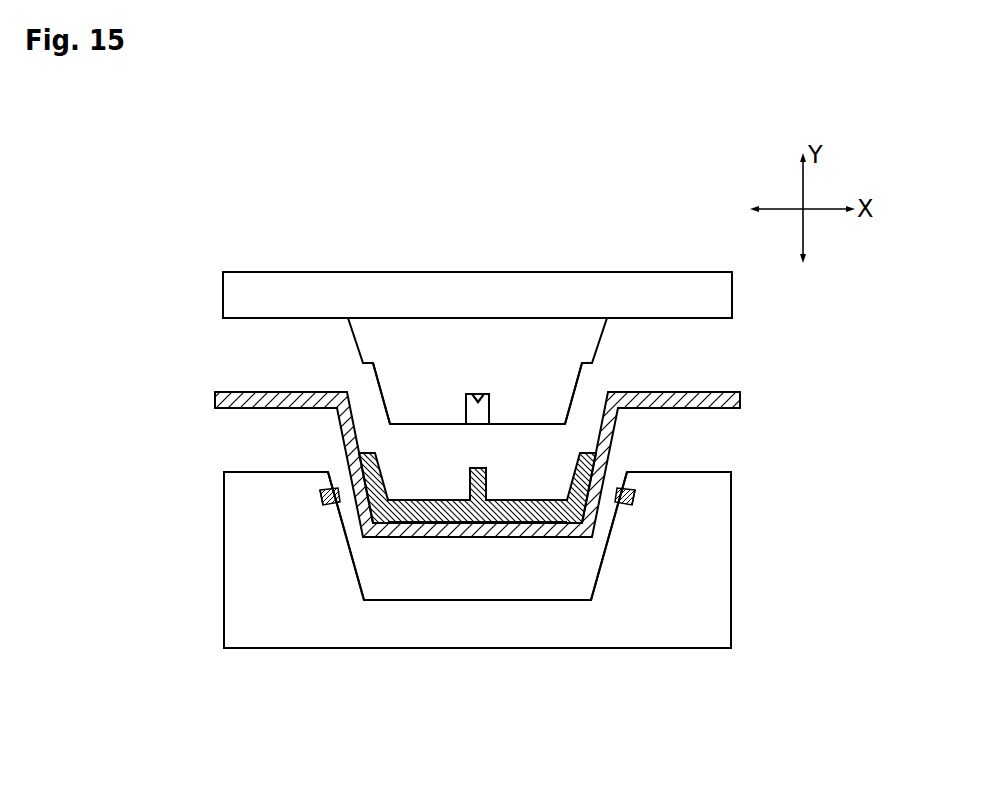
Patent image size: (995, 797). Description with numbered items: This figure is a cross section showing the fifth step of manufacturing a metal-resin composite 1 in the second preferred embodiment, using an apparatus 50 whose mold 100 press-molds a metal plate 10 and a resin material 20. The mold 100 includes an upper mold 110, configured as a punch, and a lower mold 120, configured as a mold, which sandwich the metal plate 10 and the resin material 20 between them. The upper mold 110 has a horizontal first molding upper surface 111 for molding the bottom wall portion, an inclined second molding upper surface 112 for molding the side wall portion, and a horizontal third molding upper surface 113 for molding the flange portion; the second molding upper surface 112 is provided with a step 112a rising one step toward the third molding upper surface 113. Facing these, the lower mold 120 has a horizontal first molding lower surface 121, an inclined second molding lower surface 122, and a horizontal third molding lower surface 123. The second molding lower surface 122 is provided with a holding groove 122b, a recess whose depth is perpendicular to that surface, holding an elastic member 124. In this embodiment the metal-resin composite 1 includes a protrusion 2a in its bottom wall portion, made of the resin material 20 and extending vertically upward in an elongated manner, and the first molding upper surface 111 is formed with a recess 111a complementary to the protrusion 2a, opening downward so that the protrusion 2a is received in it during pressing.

The apparatus 50 is at (233, 219).
The mold 100 is at (480, 407).
The upper mold 110 is at (403, 273).
The step 112a is at (367, 363).
The recess 111a is at (478, 400).
The first molding upper surface 111 is at (527, 427).
The second molding upper surface 112 is at (385, 404).
The third molding upper surface 113 is at (268, 318).
The lower mold 120 is at (483, 648).
The third molding lower surface 123 is at (237, 471).
The second molding lower surface 122 is at (357, 573).
The first molding lower surface 121 is at (387, 600).
The elastic member 124 is at (322, 494).
The holding groove 122b is at (328, 506).
The metal-resin composite 1 is at (747, 366).
The metal plate 10 is at (213, 393).
The resin material 20 is at (410, 499).
The protrusion 2a is at (455, 522).